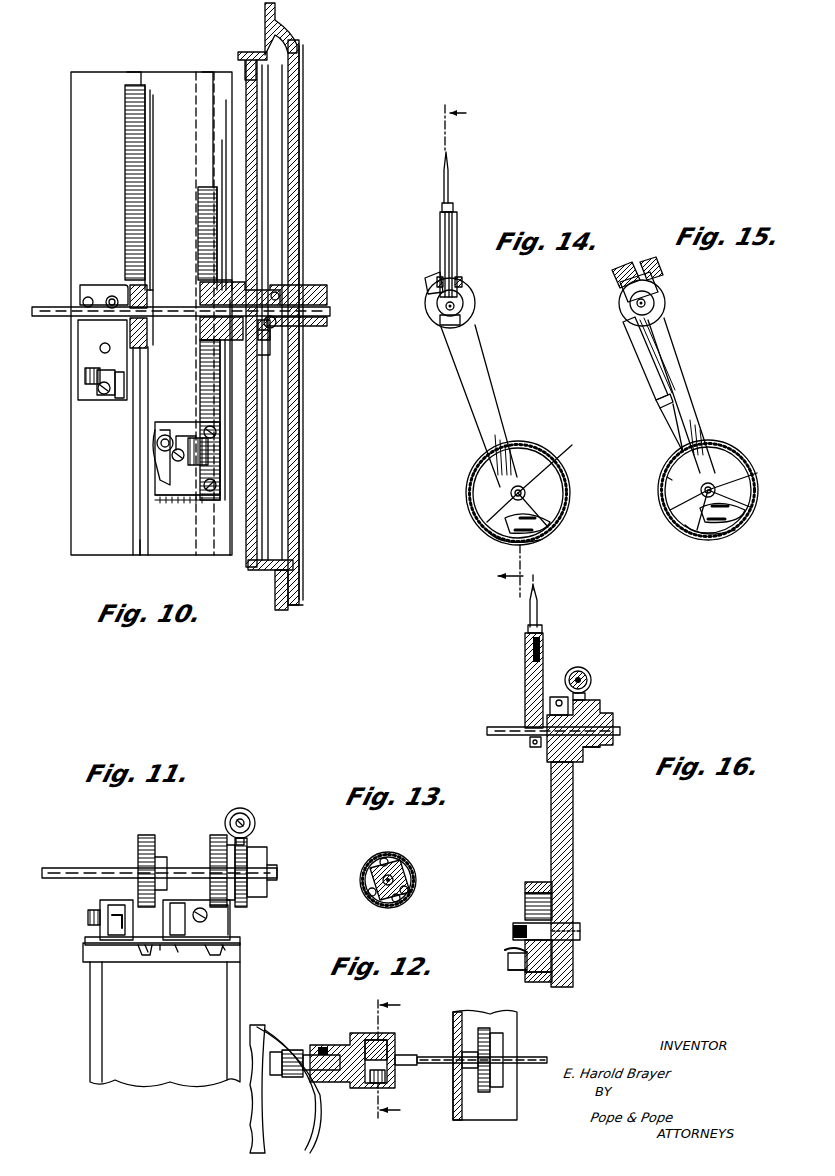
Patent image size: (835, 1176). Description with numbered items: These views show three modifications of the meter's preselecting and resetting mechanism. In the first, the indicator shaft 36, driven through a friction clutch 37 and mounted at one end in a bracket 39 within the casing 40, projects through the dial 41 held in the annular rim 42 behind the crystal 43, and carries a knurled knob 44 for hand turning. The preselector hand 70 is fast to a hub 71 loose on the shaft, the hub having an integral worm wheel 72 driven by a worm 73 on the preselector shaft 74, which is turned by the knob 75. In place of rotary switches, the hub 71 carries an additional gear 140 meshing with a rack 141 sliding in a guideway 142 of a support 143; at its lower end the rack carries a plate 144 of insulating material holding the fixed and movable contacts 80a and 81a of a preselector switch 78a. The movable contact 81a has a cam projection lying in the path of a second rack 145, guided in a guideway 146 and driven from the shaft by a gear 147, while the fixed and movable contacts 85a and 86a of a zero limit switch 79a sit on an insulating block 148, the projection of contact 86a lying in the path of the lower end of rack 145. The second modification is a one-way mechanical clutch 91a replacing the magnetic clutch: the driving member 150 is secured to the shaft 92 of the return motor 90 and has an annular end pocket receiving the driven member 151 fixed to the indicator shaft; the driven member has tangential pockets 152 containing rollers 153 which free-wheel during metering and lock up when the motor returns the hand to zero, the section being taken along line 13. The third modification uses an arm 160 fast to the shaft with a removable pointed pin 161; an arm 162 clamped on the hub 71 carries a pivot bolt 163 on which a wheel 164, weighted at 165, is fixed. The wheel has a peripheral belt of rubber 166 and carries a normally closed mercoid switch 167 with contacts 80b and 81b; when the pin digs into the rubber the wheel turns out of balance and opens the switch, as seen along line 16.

In FIG. 12, the section line 13— 13 is at (377, 1063).
In FIG. 14, the section line 16— 16 is at (480, 351).
In FIG. 16, the section line 16— 16 is at (516, 589).
In FIG. 10, the indicator shaft 36 is at (64, 308).
In FIG. 14, the indicator shaft 36 is at (455, 312).
In FIG. 15, the indicator shaft 36 is at (650, 305).
In FIG. 16, the indicator shaft 36 is at (485, 731).
In FIG. 11, the indicator shaft 36 is at (68, 866).
In FIG. 13, the indicator shaft 36 is at (395, 872).
In FIG. 12, the indicator shaft 36 is at (545, 1065).
In FIG. 12, the friction clutch 37 is at (490, 1088).
In FIG. 12, the bracket 39 is at (510, 1103).
In FIG. 10, the casing 40 is at (263, 10).
In FIG. 10, the dial 41 is at (256, 75).
In FIG. 10, the annular rim 42 is at (254, 52).
In FIG. 10, the crystal 43 is at (290, 118).
In FIG. 10, the knurled knob 44 is at (327, 296).
In FIG. 10, the preselector hand 70 is at (265, 326).
In FIG. 10, the hub 71 is at (258, 345).
In FIG. 14, the hub 71 is at (470, 300).
In FIG. 15, the hub 71 is at (662, 300).
In FIG. 16, the hub 71 is at (595, 710).
In FIG. 11, the hub 71 is at (262, 858).
In FIG. 10, the worm wheel 72 is at (228, 285).
In FIG. 16, the worm wheel 72 is at (587, 762).
In FIG. 11, the worm wheel 72 is at (242, 907).
In FIG. 16, the worm 73 is at (572, 670).
In FIG. 11, the worm 73 is at (250, 811).
In FIG. 16, the preselector shaft 74 is at (592, 678).
In FIG. 11, the preselector shaft 74 is at (255, 826).
In FIG. 10, the knob 75 is at (280, 292).
In FIG. 10, the preselector switch 78a is at (175, 470).
In FIG. 11, the preselector switch 78a is at (188, 897).
In FIG. 10, the zero limit switch 79a is at (116, 382).
In FIG. 11, the zero limit switch 79a is at (122, 897).
In FIG. 10, the fixed contact 80a is at (207, 472).
In FIG. 14, the contact 80b is at (548, 528).
In FIG. 15, the contact 80b is at (752, 508).
In FIG. 16, the contact 80b is at (510, 968).
In FIG. 10, the movable contact 81a is at (198, 422).
In FIG. 16, the contact 81b is at (518, 968).
In FIG. 10, the fixed contact 85a is at (118, 378).
In FIG. 10, the movable contact 86a is at (120, 400).
In FIG. 12, the electric return motor 90 is at (265, 1030).
In FIG. 12, the one-way mechanical clutch 91a is at (349, 1095).
In FIG. 12, the motor shaft 92 is at (305, 1078).
In FIG. 10, the gear 140 is at (205, 360).
In FIG. 11, the gear 140 is at (212, 835).
In FIG. 10, the rack 141 is at (205, 390).
In FIG. 11, the rack 141 is at (210, 955).
In FIG. 10, the guideway 142 is at (210, 80).
In FIG. 11, the guideway 142 is at (224, 955).
In FIG. 10, the support 143 is at (189, 71).
In FIG. 11, the support 143 is at (82, 960).
In FIG. 10, the plate of insulating material 144 is at (166, 498).
In FIG. 11, the plate of insulating material 144 is at (178, 950).
In FIG. 10, the second rack 145 is at (137, 182).
In FIG. 11, the second rack 145 is at (148, 950).
In FIG. 10, the guideway 146 is at (148, 552).
In FIG. 11, the guideway 146 is at (142, 955).
In FIG. 10, the gear 147 is at (150, 290).
In FIG. 11, the gear 147 is at (147, 835).
In FIG. 10, the insulating block 148 is at (80, 358).
In FIG. 11, the insulating block 148 is at (85, 939).
In FIG. 13, the driving member 150 is at (370, 880).
In FIG. 12, the driving member 150 is at (338, 1050).
In FIG. 13, the driven member 151 is at (393, 905).
In FIG. 12, the driven member 151 is at (420, 1033).
In FIG. 13, the pockets 152 is at (412, 880).
In FIG. 13, the rollers 153 is at (388, 855).
In FIG. 12, the rollers 153 is at (385, 1085).
In FIG. 14, the arm 160 is at (440, 252).
In FIG. 15, the arm 160 is at (648, 355).
In FIG. 16, the arm 160 is at (524, 693).
In FIG. 14, the pointed pin 161 is at (450, 178).
In FIG. 15, the pointed pin 161 is at (670, 430).
In FIG. 16, the pointed pin 161 is at (539, 618).
In FIG. 14, the arm 162 is at (478, 370).
In FIG. 15, the arm 162 is at (680, 378).
In FIG. 16, the arm 162 is at (573, 843).
In FIG. 14, the pivot bolt 163 is at (570, 443).
In FIG. 15, the pivot bolt 163 is at (758, 474).
In FIG. 16, the pivot bolt 163 is at (567, 940).
In FIG. 14, the wheel 164 is at (563, 495).
In FIG. 15, the wheel 164 is at (666, 478).
In FIG. 16, the wheel 164 is at (525, 898).
In FIG. 14, the weight 165 is at (490, 495).
In FIG. 15, the weight 165 is at (697, 512).
In FIG. 16, the weight 165 is at (548, 962).
In FIG. 14, the peripheral belt of rubber 166 is at (470, 478).
In FIG. 15, the peripheral belt of rubber 166 is at (745, 468).
In FIG. 16, the peripheral belt of rubber 166 is at (540, 882).
In FIG. 14, the mercoid switch 167 is at (495, 540).
In FIG. 15, the mercoid switch 167 is at (700, 537).